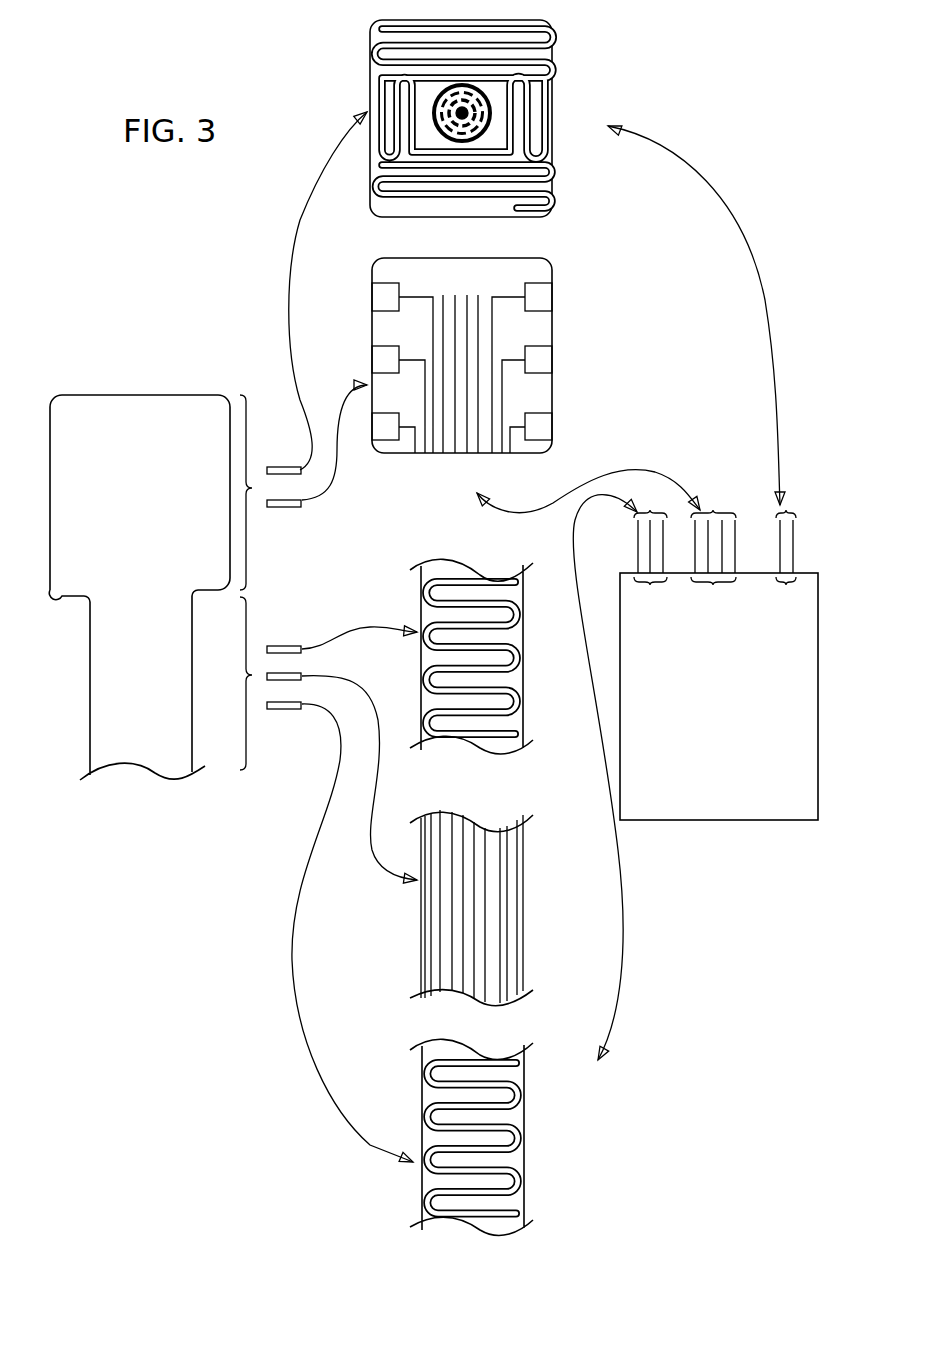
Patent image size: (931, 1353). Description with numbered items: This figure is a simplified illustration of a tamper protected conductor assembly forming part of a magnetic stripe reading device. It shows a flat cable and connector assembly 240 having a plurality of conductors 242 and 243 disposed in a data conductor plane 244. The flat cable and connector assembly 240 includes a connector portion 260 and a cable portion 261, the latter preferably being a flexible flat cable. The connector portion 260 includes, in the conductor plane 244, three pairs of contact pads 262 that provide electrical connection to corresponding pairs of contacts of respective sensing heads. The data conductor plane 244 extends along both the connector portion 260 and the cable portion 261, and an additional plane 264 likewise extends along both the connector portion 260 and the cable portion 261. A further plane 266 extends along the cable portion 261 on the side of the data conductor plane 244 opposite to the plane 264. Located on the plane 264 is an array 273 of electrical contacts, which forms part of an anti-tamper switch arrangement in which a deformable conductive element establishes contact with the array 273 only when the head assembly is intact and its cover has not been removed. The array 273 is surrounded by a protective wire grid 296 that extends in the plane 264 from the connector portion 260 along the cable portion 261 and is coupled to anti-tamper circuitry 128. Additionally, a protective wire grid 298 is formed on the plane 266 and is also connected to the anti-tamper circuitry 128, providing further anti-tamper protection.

The anti-tamper circuitry 128 is at (719, 696).
The flat cable and connector assembly 240 is at (185, 388).
The conductors 242 is at (500, 425).
The conductors 243 is at (478, 457).
The data conductor plane 244 is at (556, 323).
The connector portion 260 is at (130, 395).
The cable portion 261 is at (141, 748).
The contact pads 262 is at (388, 297).
The additional plane 264 is at (556, 190).
The further plane 266 is at (290, 709).
The array of electrical contacts 273 is at (487, 88).
The protective wire grid 296 is at (540, 150).
The protective wire grid 298 is at (516, 1116).